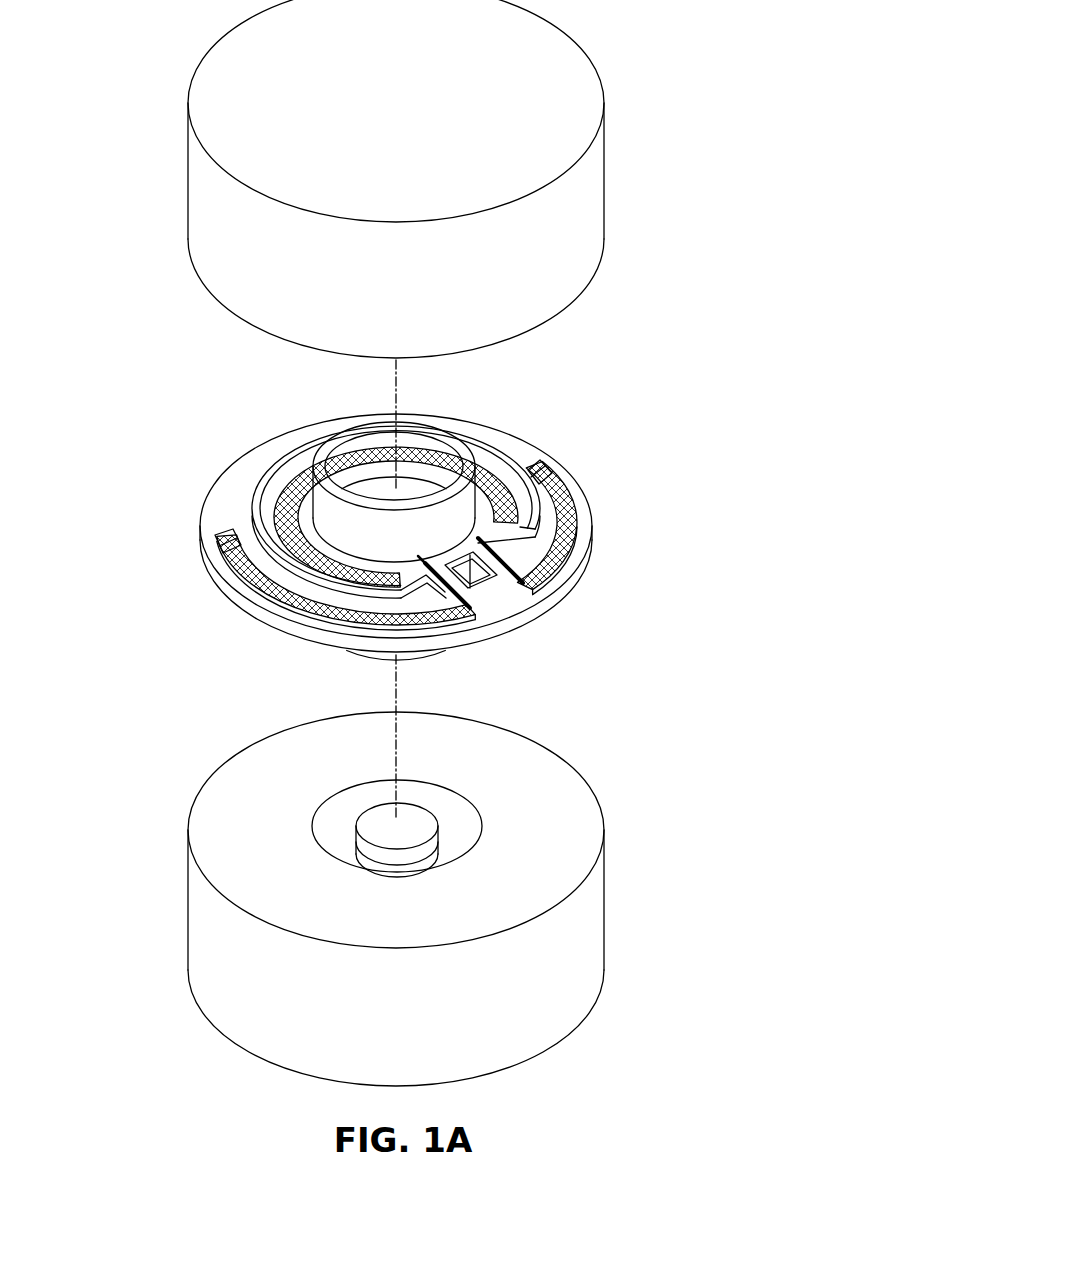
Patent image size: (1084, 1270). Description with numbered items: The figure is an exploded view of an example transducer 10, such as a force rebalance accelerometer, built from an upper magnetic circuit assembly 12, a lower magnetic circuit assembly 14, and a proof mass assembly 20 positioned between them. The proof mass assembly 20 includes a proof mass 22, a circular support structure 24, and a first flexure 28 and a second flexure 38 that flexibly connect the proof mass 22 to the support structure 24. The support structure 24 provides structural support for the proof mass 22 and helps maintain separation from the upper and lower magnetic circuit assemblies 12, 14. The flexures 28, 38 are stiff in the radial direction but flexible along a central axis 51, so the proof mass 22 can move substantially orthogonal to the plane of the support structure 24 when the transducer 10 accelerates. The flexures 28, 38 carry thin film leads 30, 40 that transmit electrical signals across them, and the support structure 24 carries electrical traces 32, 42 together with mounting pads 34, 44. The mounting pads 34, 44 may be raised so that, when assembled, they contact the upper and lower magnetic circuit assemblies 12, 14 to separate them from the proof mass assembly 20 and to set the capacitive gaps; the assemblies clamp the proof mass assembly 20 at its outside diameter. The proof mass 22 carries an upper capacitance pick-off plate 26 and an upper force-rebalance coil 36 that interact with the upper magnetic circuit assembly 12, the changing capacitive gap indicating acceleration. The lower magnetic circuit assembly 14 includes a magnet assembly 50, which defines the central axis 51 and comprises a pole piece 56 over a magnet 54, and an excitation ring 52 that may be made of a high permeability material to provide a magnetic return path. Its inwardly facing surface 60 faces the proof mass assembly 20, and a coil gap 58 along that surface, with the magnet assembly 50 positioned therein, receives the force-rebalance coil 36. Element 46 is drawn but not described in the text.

The transducer 10 is at (806, 66).
The upper magnetic circuit assembly 12 is at (644, 166).
The lower magnetic circuit assembly 14 is at (644, 950).
The proof mass assembly 20 is at (549, 409).
The proof mass 22 is at (512, 490).
The support structure 24 is at (296, 437).
The upper capacitance pick-off plate 26 is at (278, 512).
The first flexure 28 is at (500, 546).
The thin film lead 30 is at (521, 571).
The electrical trace 32 is at (533, 570).
The mounting pad 34 is at (544, 473).
The upper force-rebalance coil 36 is at (433, 430).
The second flexure 38 is at (437, 597).
The thin film lead 40 is at (456, 598).
The electrical trace 42 is at (252, 580).
The mounting pad 44 is at (220, 538).
The lead end 46 is at (432, 572).
The magnet assembly 50 is at (423, 794).
The central axis 51 is at (394, 689).
The excitation ring 52 is at (458, 830).
The magnet 54 is at (433, 848).
The pole piece 56 is at (420, 836).
The coil gap 58 is at (478, 820).
The inwardly facing surface 60 is at (238, 797).